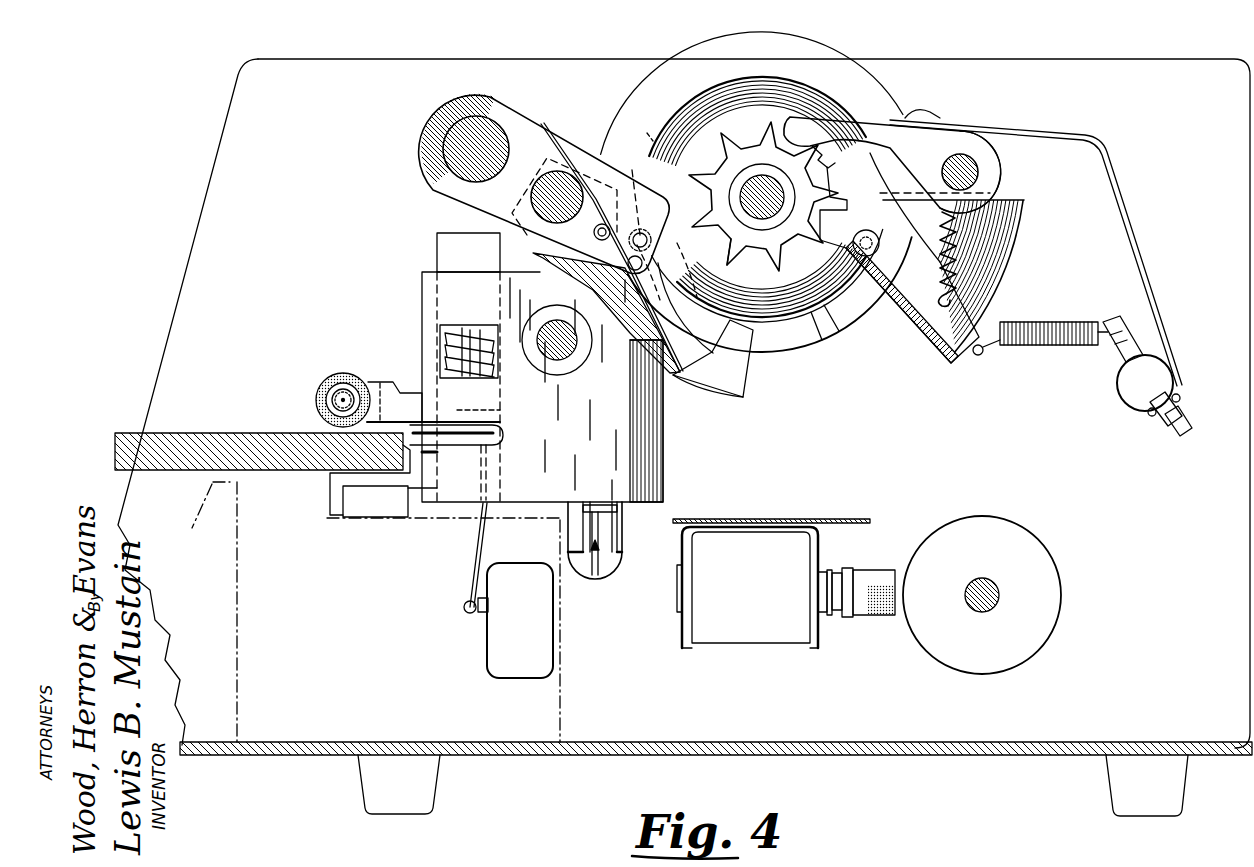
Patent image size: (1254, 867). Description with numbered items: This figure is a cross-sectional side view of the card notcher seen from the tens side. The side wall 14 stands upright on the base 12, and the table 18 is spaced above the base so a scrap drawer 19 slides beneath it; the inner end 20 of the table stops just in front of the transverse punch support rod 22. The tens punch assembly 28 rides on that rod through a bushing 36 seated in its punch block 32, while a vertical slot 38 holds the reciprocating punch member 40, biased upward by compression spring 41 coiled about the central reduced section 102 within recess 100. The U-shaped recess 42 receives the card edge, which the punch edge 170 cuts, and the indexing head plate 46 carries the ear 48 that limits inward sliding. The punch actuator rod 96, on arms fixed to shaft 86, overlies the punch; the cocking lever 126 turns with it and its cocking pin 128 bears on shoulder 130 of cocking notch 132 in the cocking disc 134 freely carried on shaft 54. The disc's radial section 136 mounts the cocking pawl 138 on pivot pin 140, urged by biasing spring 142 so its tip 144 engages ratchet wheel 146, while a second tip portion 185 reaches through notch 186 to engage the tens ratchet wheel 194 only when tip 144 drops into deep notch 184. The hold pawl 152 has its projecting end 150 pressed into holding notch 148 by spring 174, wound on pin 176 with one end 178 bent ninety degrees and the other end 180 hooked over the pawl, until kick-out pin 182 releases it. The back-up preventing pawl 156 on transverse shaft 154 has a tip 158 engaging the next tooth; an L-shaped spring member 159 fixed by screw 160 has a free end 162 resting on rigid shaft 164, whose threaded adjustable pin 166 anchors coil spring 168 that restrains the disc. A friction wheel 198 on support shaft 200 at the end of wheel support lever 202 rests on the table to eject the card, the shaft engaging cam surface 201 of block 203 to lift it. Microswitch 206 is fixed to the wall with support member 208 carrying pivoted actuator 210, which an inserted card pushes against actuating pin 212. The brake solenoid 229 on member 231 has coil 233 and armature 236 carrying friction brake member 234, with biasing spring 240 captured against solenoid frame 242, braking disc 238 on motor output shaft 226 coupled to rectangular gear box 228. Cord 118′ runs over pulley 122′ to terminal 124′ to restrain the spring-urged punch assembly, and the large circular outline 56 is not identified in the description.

The base 12 is at (933, 756).
The side wall 14 is at (212, 170).
The table 18 is at (165, 432).
The scrap drawer 19 is at (237, 620).
The inner end of table 20 is at (406, 482).
The punch support rod 22 is at (570, 356).
The tens punch assembly 28 is at (569, 387).
The punch block 32 is at (567, 389).
The bushing 36 is at (580, 376).
The vertical slot 38 is at (437, 300).
The punch member 40 is at (440, 257).
The compression spring 41 is at (435, 360).
The U-shaped recess 42 is at (503, 434).
The indexing head plate 46 is at (650, 415).
The indexing ear 48 is at (685, 308).
The shaft 54 is at (762, 175).
The drum 56 is at (838, 50).
The support shaft 86 is at (545, 197).
The punch actuator rod 96 is at (436, 160).
The recess 100 is at (440, 328).
The central reduced section 102 is at (472, 378).
The cord 118′ is at (606, 580).
The pulley 122′ is at (617, 542).
The terminal or connector 124′ is at (622, 518).
The cocking lever 126 is at (541, 250).
The cocking pin 128 is at (632, 170).
The shoulder 130 is at (696, 240).
The cocking notch 132 is at (724, 253).
The cocking disc 134 is at (740, 77).
The radial section 136 is at (1012, 270).
The cocking pawl 138 is at (912, 316).
The pivot pin 140 is at (866, 262).
The biasing spring 142 is at (985, 245).
The pawl tip 144 is at (819, 207).
The ratchet wheel 146 is at (792, 308).
The holding notch 148 is at (832, 335).
The projecting end 150 is at (753, 332).
The hold pawl 152 is at (710, 378).
The transverse supporting shaft 154 is at (978, 172).
The back-up preventing pawl 156 is at (985, 152).
The pawl tip 158 is at (903, 147).
The L-shaped spring member 159 is at (1078, 140).
The screw 160 is at (925, 120).
The free end 162 is at (1183, 386).
The rigid shaft 164 is at (1135, 400).
The threaded adjustable pin 166 is at (1185, 436).
The coil spring 168 is at (1035, 350).
The punch edge 170 is at (493, 411).
The biasing spring 174 is at (622, 252).
The pin 176 is at (594, 232).
The spring end 178 is at (541, 124).
The spring end 180 is at (672, 380).
The kick-out pin 182 is at (667, 271).
The deep notch 184 is at (732, 184).
The second tip portion 185 is at (812, 163).
The notch 186 is at (880, 228).
The tens indexing head ratchet wheel 194 is at (638, 128).
The friction wheel 198 is at (328, 385).
The support shaft 200 is at (318, 394).
The cam surface 201 is at (372, 380).
The wheel support lever 202 is at (426, 454).
The block 203 is at (318, 422).
The microswitch 206 is at (522, 678).
The support member 208 is at (468, 614).
The microswitch actuator 210 is at (477, 548).
The microswitch actuating pin 212 is at (488, 598).
The output shaft 226 is at (1000, 592).
The rectangular gear box 228 is at (745, 660).
The brake solenoid 229 is at (790, 640).
The member 231 is at (843, 519).
The coil 233 is at (752, 610).
The friction brake member 234 is at (876, 570).
The solenoid armature 236 is at (818, 570).
The braking disc 238 is at (1050, 546).
The biasing spring 240 is at (818, 607).
The solenoid frame 242 is at (850, 618).